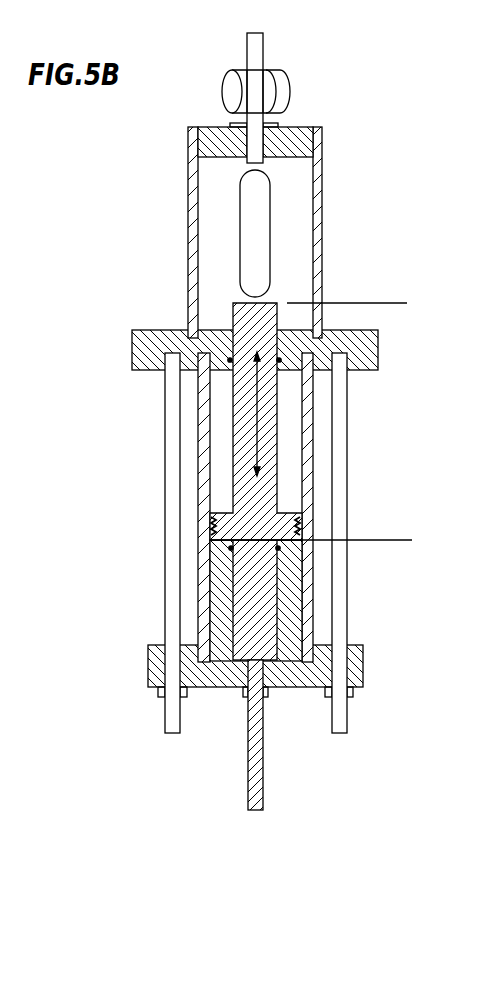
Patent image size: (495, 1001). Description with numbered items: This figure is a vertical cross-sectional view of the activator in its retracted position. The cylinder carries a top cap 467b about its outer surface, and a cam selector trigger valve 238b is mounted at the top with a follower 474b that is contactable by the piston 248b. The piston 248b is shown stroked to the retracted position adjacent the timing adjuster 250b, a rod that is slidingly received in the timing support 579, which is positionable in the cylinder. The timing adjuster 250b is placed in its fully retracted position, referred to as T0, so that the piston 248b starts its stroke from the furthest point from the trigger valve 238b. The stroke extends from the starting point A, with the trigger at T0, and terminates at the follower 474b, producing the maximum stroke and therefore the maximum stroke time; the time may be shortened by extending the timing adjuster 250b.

The trigger valve 238b is at (273, 70).
The top cap 467b is at (303, 127).
The follower 474b is at (252, 144).
The piston 248b is at (243, 313).
The timing adjuster 250b is at (263, 570).
The timing support 579 is at (220, 595).
The starting point A is at (357, 305).
The fully retracted position T0 is at (323, 542).